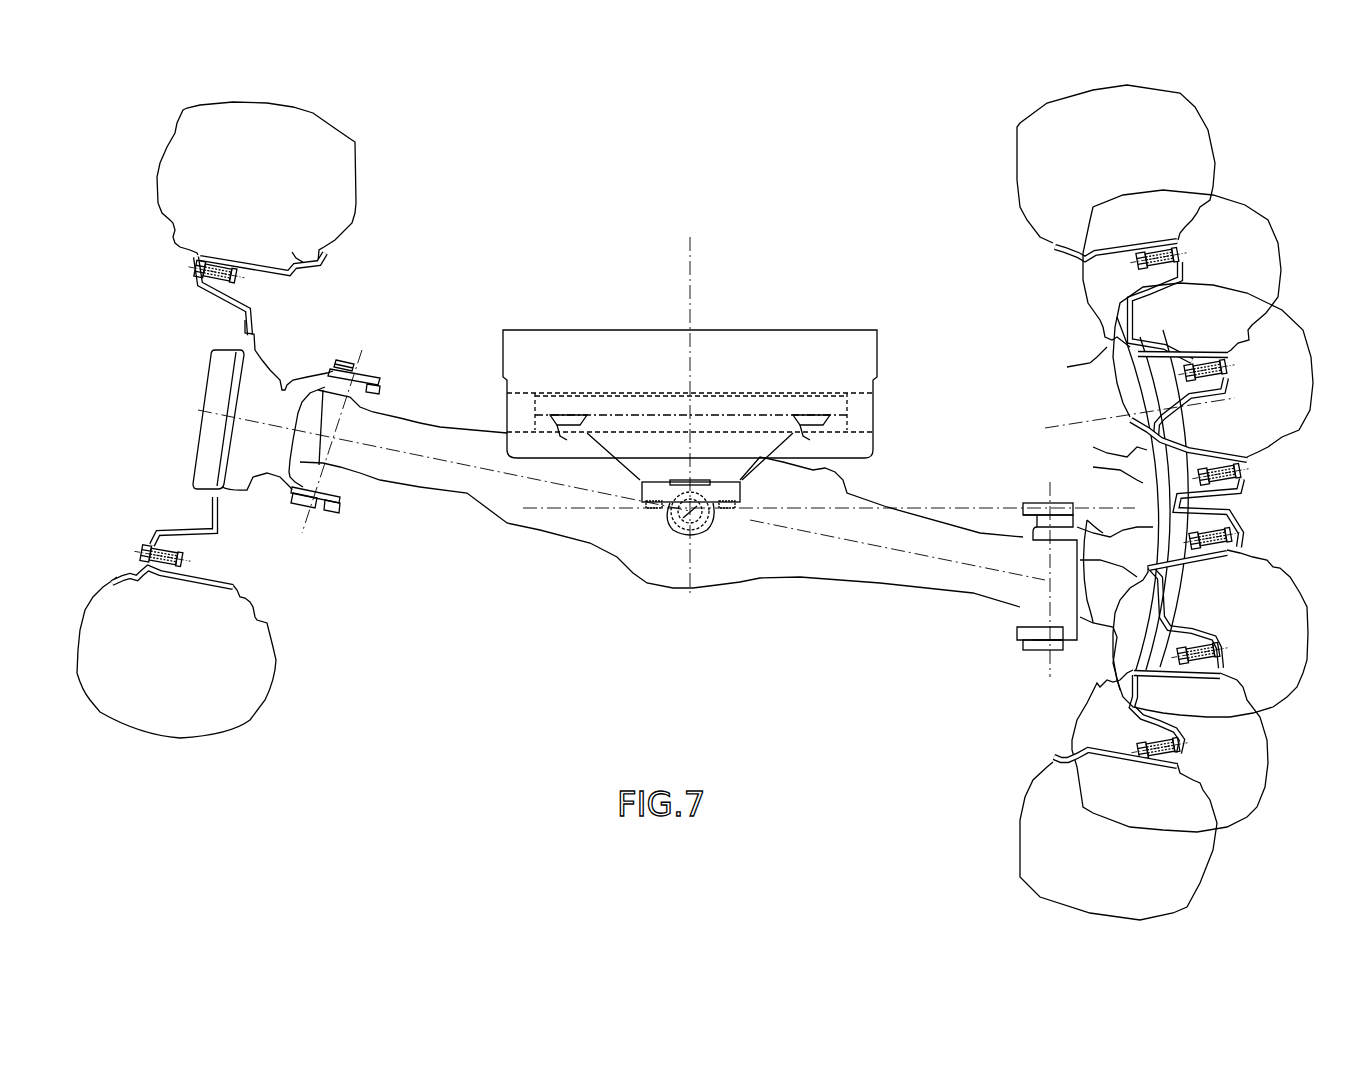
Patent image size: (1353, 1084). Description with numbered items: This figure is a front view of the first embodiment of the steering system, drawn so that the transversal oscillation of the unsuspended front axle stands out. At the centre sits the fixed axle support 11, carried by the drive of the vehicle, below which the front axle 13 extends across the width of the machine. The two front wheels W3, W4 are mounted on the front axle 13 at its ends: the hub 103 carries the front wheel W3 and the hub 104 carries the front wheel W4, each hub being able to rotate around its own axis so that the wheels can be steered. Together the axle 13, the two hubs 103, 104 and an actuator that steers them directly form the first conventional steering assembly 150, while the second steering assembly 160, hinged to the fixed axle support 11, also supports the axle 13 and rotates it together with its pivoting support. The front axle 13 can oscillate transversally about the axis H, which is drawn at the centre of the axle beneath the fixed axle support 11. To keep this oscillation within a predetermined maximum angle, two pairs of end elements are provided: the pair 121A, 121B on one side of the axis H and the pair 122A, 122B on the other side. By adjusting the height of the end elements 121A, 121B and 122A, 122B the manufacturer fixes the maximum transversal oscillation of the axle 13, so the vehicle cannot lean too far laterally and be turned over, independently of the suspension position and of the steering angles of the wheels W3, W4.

The fixed axle support 11 is at (865, 358).
The front axle 13 is at (473, 493).
The hub 103 is at (290, 375).
The hub 104 is at (1082, 560).
The end element 121A is at (567, 433).
The end element 121B is at (567, 433).
The end element 122A is at (805, 420).
The end element 122B is at (833, 480).
The first conventional steering assembly 150 is at (283, 302).
The second steering assembly 160 is at (700, 373).
The axis H is at (675, 525).
The front wheel W3 is at (240, 703).
The front wheel W4 is at (1188, 860).